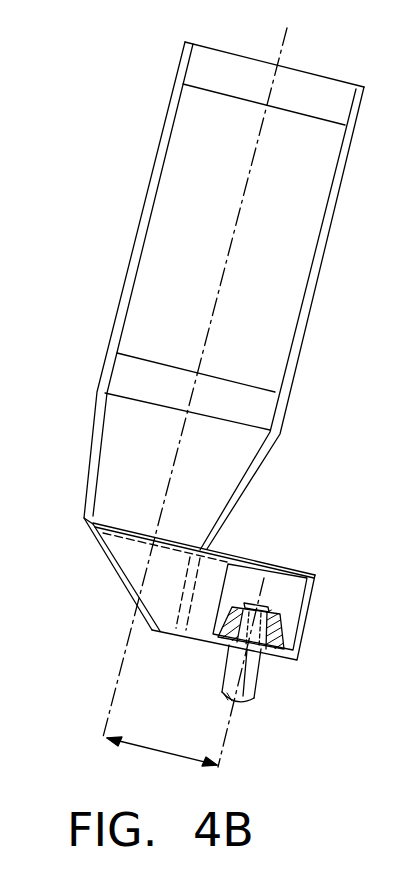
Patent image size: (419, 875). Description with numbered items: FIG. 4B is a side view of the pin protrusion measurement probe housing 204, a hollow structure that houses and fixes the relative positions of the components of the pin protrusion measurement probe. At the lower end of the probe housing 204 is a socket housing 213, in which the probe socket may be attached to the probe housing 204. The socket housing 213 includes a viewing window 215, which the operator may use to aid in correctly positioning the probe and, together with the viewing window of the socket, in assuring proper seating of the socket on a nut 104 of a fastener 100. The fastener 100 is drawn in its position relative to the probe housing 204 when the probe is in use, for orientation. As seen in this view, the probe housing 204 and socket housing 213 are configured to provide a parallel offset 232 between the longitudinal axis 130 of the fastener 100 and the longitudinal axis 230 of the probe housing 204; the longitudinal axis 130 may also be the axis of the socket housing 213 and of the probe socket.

The pin protrusion measurement probe housing 204 is at (128, 52).
The longitudinal axis of probe housing 230 is at (232, 237).
The socket housing 213 is at (313, 594).
The viewing window 215 is at (250, 570).
The nut 104 is at (277, 640).
The fastener 100 is at (276, 676).
The longitudinal axis of fastener 130 is at (227, 733).
The parallel offset 232 is at (143, 748).